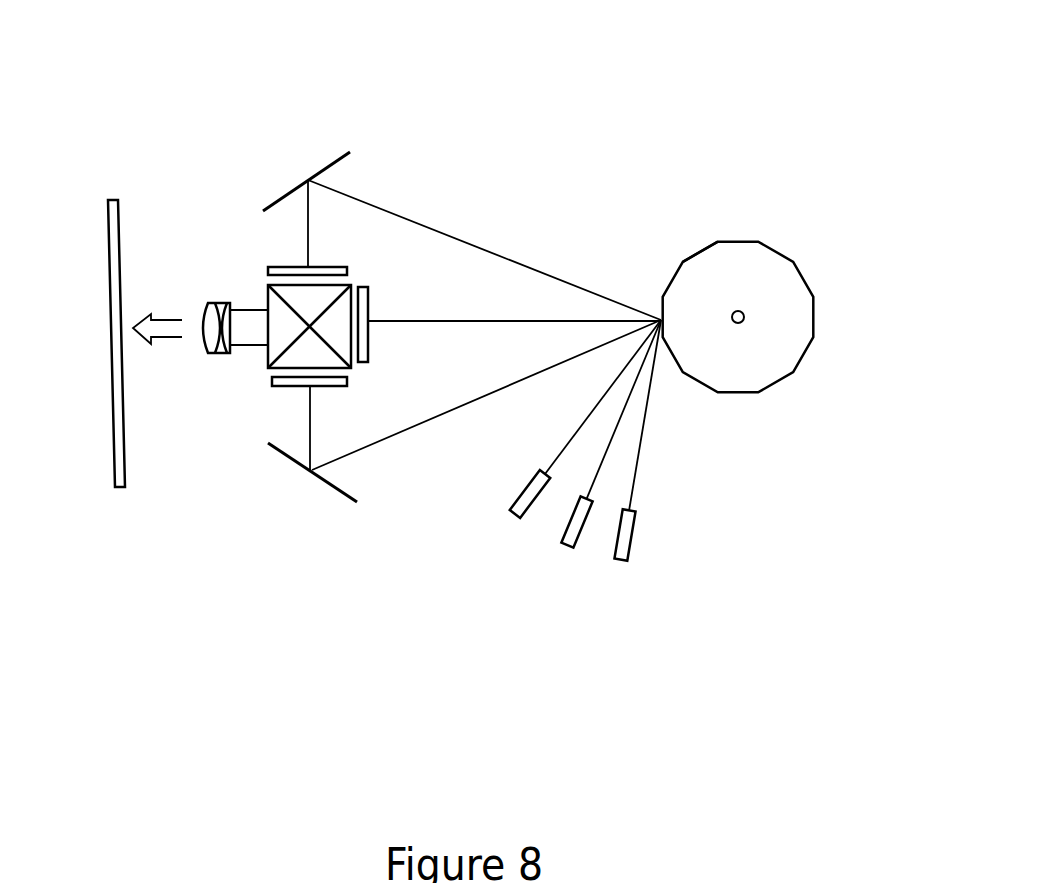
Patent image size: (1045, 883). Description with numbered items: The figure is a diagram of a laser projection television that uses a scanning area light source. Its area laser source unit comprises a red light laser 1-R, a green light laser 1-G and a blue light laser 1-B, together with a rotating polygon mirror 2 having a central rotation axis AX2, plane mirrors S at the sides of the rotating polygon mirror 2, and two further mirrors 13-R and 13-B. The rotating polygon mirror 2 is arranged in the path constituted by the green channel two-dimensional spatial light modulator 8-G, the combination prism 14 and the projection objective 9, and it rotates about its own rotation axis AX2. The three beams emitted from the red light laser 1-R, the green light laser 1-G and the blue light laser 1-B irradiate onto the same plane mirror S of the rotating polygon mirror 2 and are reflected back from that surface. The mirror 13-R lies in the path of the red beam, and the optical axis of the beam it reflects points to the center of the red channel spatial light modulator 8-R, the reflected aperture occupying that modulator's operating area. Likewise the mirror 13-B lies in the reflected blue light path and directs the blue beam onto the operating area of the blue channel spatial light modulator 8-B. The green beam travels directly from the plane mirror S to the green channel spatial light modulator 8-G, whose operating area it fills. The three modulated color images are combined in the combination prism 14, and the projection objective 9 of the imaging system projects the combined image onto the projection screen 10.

The projection screen 10 is at (110, 200).
The projection objective 9 is at (207, 310).
The combination prism 14 is at (280, 345).
The blue channel 2-D spatial light modulator 8-B is at (270, 268).
The green channel 2-D spatial light modulator 8-G is at (368, 345).
The red channel 2-D spatial light modulator 8-R is at (330, 382).
The mirror 13-B is at (342, 153).
The mirror 13-R is at (332, 488).
The rotating polygon mirror 2 is at (788, 335).
The rotation axis AX2 is at (747, 310).
The plane mirror S is at (697, 253).
The red light laser 1-R is at (520, 515).
The green light laser 1-G is at (578, 533).
The blue light laser 1-B is at (632, 538).